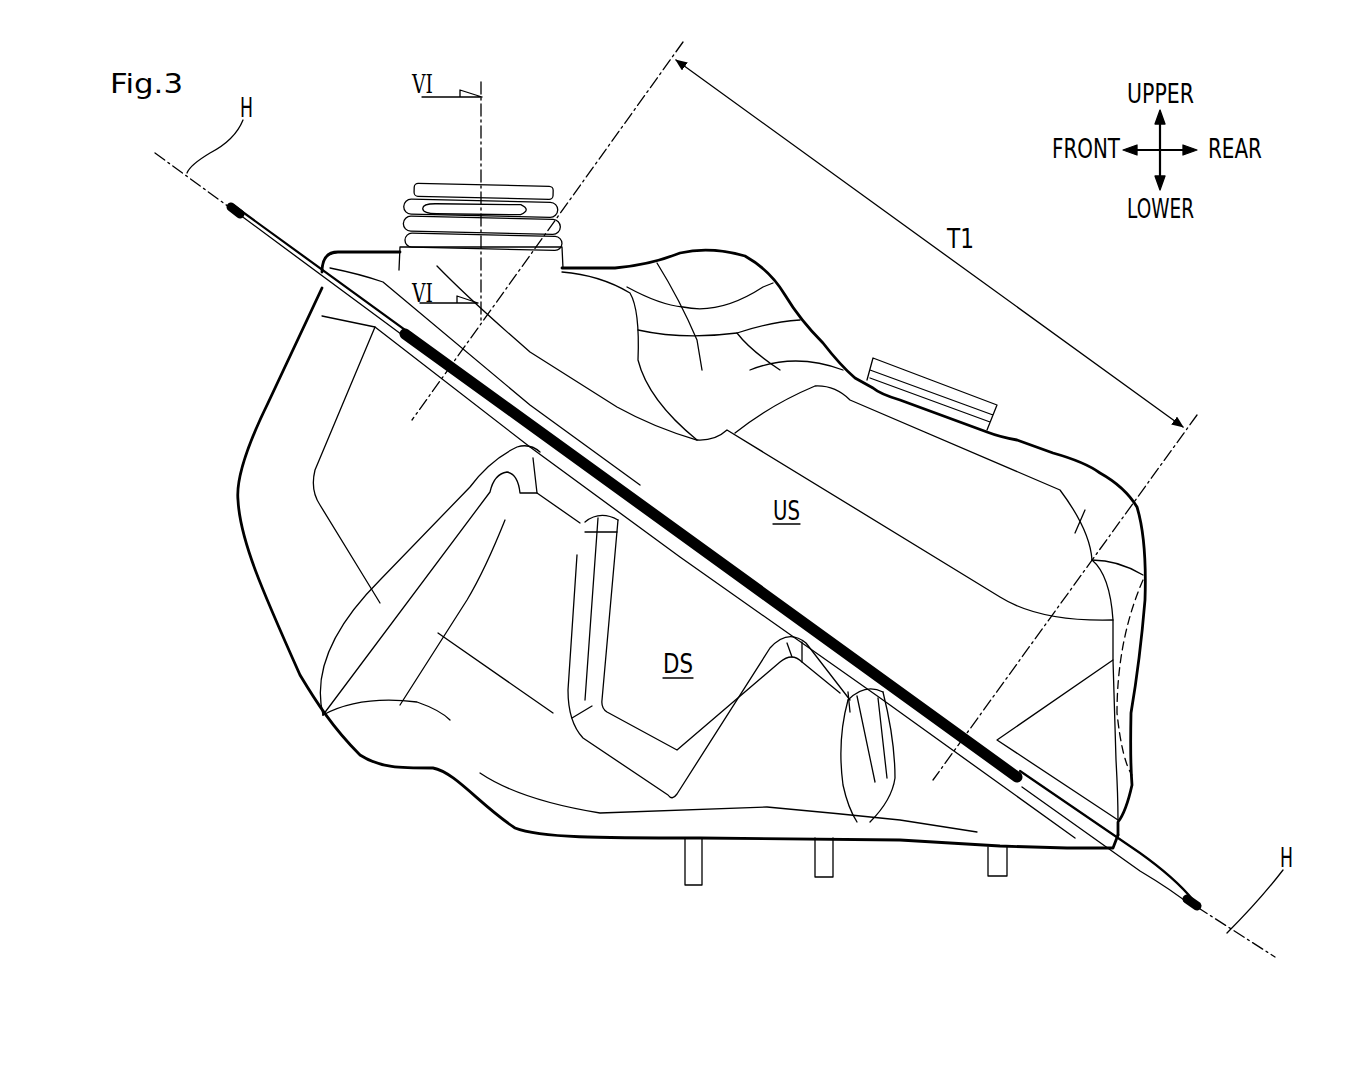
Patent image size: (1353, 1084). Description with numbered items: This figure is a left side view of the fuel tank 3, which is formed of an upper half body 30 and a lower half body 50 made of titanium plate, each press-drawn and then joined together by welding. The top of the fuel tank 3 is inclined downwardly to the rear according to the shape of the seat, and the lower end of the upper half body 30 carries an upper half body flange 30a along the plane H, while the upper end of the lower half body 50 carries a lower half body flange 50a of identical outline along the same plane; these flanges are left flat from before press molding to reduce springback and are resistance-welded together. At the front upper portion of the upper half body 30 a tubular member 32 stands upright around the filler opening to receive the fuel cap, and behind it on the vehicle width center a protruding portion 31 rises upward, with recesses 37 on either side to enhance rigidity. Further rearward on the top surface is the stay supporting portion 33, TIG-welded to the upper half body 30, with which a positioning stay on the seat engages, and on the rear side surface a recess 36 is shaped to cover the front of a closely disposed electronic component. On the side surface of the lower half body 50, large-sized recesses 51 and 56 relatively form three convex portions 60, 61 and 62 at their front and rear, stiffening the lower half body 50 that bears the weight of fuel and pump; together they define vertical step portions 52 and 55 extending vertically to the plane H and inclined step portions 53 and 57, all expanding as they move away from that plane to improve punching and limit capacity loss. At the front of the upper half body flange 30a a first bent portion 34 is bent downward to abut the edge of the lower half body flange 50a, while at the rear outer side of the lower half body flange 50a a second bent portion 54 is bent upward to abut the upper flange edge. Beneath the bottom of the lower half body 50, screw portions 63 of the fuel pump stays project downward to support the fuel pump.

The fuel tank 3 is at (352, 200).
The upper half body 30 is at (823, 343).
The upper half body flange 30a is at (717, 552).
The protruding portion 31 is at (733, 273).
The tubular member 32 is at (542, 203).
The stay supporting portion 33 is at (933, 397).
The first bent portion 34 is at (276, 252).
The recess 36 is at (1127, 637).
The recess 37 is at (703, 323).
The lower half body 50 is at (560, 840).
The lower half body flange 50a is at (681, 540).
The recess 51 is at (517, 623).
The vertical step portion 52 is at (400, 705).
The inclined step portion 53 is at (592, 603).
The second bent portion 54 is at (1140, 847).
The vertical step portion 55 is at (713, 733).
The recess 56 is at (782, 740).
The inclined step portion 57 is at (867, 730).
The convex portion 60 is at (363, 467).
The convex portion 61 is at (648, 690).
The convex portion 62 is at (925, 783).
The screw portion 63 is at (690, 860).